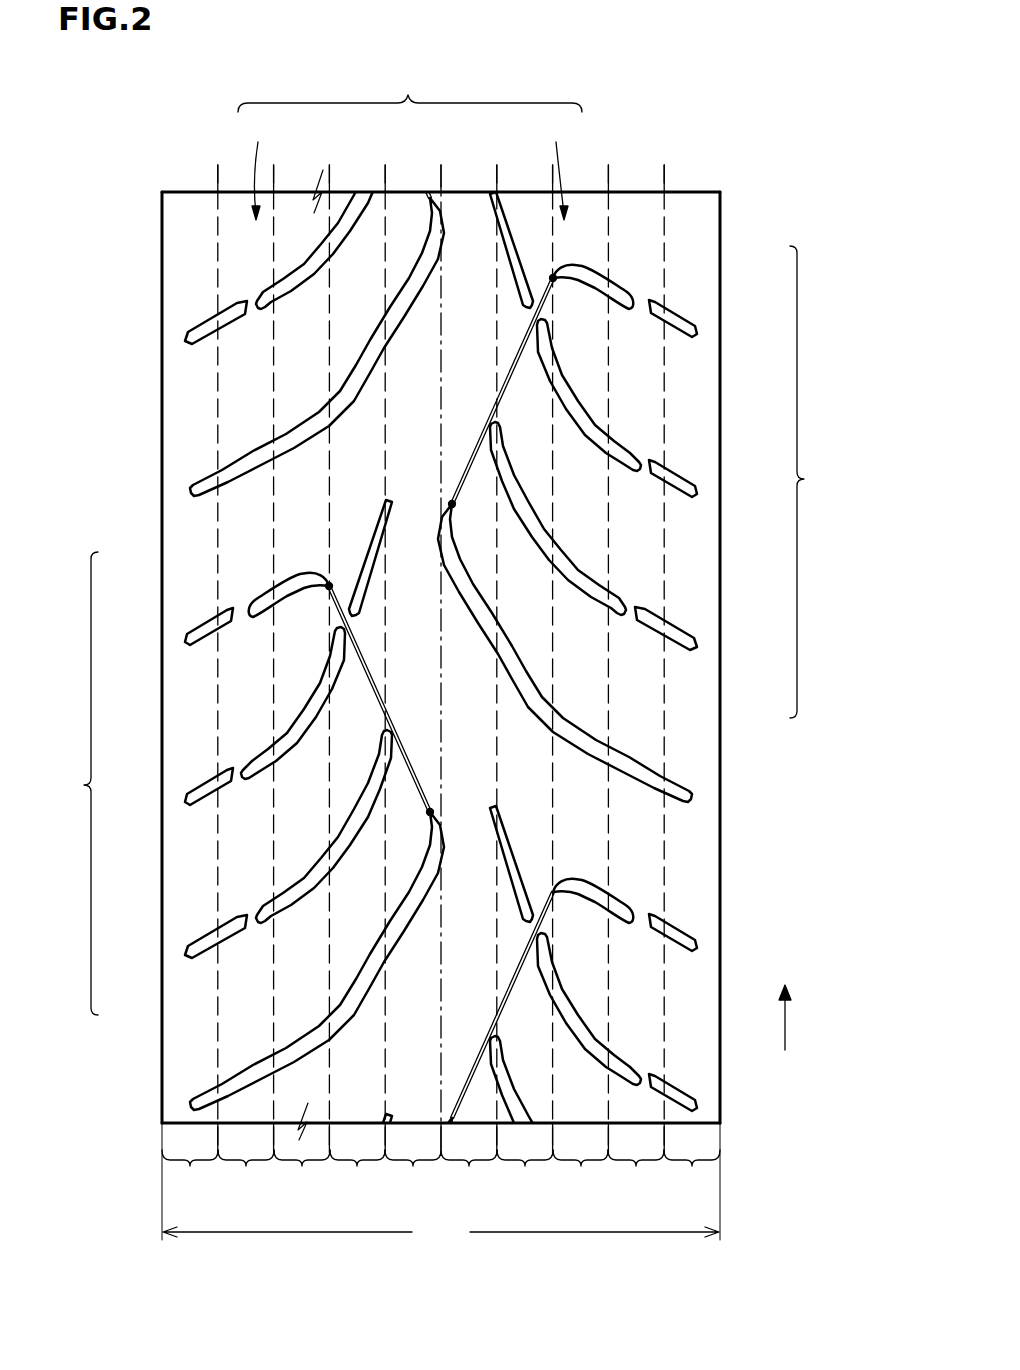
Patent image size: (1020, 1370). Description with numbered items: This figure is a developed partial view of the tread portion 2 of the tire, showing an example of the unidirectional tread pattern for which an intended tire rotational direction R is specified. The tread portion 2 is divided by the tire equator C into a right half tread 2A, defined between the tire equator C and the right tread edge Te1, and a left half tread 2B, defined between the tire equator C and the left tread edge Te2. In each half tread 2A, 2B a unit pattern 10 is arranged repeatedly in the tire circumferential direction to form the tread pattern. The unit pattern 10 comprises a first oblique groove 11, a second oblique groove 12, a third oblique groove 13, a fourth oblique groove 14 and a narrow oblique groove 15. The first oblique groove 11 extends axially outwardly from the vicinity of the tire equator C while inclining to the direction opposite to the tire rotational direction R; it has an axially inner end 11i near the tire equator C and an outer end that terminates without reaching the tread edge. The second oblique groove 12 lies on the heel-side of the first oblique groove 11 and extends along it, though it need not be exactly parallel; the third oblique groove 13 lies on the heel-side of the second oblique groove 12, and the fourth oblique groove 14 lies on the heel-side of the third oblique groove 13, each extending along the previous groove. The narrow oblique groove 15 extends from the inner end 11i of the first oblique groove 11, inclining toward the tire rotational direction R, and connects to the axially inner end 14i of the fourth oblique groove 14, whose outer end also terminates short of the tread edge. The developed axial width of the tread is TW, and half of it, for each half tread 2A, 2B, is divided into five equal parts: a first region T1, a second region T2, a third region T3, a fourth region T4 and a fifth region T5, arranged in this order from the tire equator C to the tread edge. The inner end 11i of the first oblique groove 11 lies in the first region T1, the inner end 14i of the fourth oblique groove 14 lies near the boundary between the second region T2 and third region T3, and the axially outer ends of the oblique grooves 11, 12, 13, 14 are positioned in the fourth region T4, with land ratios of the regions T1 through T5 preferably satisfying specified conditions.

The tread portion 2 is at (410, 88).
The right half tread 2A is at (559, 166).
The left half tread 2B is at (259, 166).
The unit pattern 10 is at (442, 630).
The first oblique groove 11 is at (563, 733).
The axially inner end of the first oblique groove 11i is at (435, 813).
The second oblique groove 12 is at (560, 567).
The third oblique groove 13 is at (590, 430).
The fourth oblique groove 14 is at (603, 287).
The axially inner end of the fourth oblique groove 14i is at (556, 276).
The narrow oblique groove 15 is at (500, 397).
The tire equator C is at (440, 640).
The right tread edge Te1 is at (722, 218).
The left tread edge Te2 is at (160, 218).
The developed axial width of the tread TW is at (441, 1184).
The first region T1 is at (441, 1173).
The second region T2 is at (441, 1173).
The third region T3 is at (441, 1173).
The fourth region T4 is at (441, 1173).
The fifth region T5 is at (441, 1173).
The tire rotational direction R is at (786, 1020).